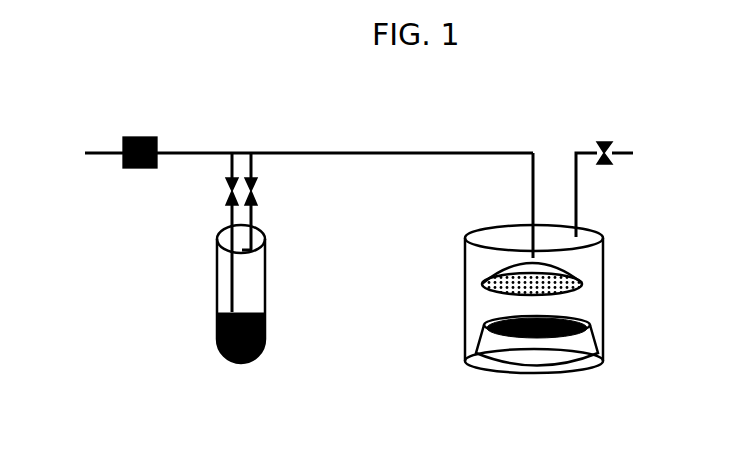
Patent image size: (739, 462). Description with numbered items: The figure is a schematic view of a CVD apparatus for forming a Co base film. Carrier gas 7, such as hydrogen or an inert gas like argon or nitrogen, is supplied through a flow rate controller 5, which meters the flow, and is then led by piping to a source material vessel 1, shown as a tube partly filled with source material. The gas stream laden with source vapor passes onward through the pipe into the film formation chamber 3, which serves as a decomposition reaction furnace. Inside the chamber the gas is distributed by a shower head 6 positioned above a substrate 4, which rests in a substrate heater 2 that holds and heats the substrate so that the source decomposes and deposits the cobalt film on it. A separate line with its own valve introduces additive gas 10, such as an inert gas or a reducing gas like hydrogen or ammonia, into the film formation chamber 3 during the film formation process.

The source material vessel 1 is at (217, 274).
The substrate heater 2 is at (488, 350).
The film formation chamber 3 is at (605, 312).
The substrate 4 is at (485, 327).
The flow rate controller 5 is at (125, 158).
The shower head 6 is at (485, 271).
The carrier gas 7 is at (299, 228).
The additive gas 10 is at (621, 189).